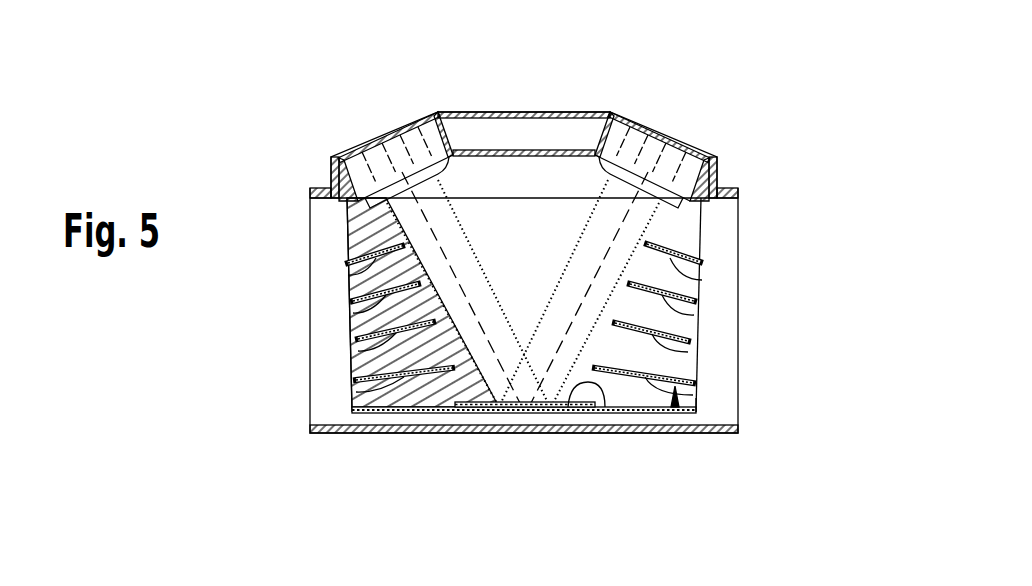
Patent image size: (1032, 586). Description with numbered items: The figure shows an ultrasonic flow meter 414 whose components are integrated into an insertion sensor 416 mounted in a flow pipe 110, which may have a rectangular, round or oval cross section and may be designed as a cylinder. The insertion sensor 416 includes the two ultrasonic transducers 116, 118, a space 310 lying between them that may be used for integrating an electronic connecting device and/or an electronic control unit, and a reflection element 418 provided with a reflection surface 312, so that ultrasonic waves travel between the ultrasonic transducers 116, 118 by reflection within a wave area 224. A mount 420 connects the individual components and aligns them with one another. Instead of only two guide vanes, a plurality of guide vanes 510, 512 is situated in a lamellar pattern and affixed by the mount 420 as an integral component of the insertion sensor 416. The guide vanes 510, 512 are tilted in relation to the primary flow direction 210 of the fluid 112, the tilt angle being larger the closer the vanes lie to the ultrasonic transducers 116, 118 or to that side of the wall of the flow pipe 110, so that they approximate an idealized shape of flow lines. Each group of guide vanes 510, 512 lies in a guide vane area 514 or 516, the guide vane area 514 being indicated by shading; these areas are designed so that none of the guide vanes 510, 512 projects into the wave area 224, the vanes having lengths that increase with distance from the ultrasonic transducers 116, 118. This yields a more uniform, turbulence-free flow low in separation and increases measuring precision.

The flow pipe 110 is at (353, 431).
The fluid 112 is at (325, 368).
The ultrasonic transducer 116 is at (415, 155).
The ultrasonic transducer 118 is at (627, 150).
The primary flow direction 210 is at (768, 297).
The wave area 224 is at (552, 359).
The space 310 is at (504, 133).
The reflection surface 312 is at (610, 408).
The ultrasonic flow meter 414 is at (574, 90).
The insertion sensor 416 is at (712, 241).
The reflection element 418 is at (427, 427).
The mount 420 is at (697, 398).
The guide vanes 510 is at (413, 300).
The guide vanes 512 is at (673, 258).
The guide vane area 514 is at (362, 390).
The guide vane area 516 is at (677, 408).